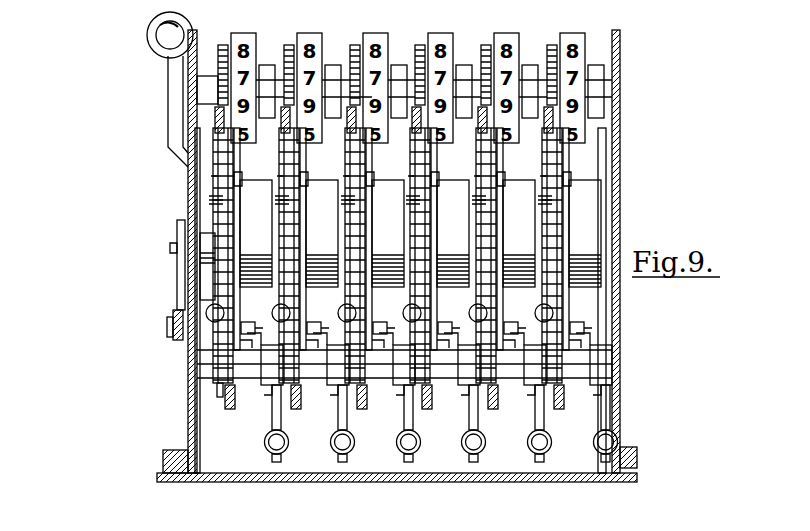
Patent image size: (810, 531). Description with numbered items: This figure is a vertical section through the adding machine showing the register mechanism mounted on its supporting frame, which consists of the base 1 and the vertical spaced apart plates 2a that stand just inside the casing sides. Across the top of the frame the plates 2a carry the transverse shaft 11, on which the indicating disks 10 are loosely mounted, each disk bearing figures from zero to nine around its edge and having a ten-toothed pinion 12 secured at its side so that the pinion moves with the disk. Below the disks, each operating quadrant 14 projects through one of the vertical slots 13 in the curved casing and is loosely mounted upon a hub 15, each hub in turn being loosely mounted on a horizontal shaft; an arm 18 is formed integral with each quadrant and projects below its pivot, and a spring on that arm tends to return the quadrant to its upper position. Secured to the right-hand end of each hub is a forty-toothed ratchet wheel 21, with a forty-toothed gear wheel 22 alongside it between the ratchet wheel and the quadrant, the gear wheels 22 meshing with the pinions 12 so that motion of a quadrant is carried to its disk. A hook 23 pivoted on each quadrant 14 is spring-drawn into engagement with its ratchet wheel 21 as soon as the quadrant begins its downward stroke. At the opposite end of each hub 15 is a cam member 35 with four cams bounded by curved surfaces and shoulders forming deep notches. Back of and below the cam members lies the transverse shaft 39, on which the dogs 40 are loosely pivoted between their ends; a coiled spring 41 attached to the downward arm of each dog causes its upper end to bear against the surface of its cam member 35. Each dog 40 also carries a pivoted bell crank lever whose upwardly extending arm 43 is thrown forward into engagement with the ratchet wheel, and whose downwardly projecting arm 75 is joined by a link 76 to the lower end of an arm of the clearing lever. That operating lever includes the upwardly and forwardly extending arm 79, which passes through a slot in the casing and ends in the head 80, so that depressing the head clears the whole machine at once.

The base 1 is at (322, 458).
The vertical spaced apart plates 2a is at (620, 326).
The indicating disks 10 is at (365, 37).
The transverse shaft 11 is at (205, 88).
The pinion 12 is at (548, 55).
The vertical slots 13 is at (558, 33).
The operating quadrant 14 is at (600, 195).
The hub 15 is at (585, 225).
The arm 18 is at (600, 300).
The ratchet wheel 21 is at (575, 160).
The gear wheel 22 is at (568, 176).
The hook 23 is at (215, 122).
The cam member 35 is at (606, 158).
The transverse shaft 39 is at (217, 395).
The dog 40 is at (606, 318).
The coiled spring 41 is at (615, 442).
The arm or dog of bell crank lever 43 is at (600, 252).
The downwardly projecting arm 75 is at (175, 322).
The link 76 is at (190, 340).
The arm 79 is at (170, 95).
The head 80 is at (158, 44).